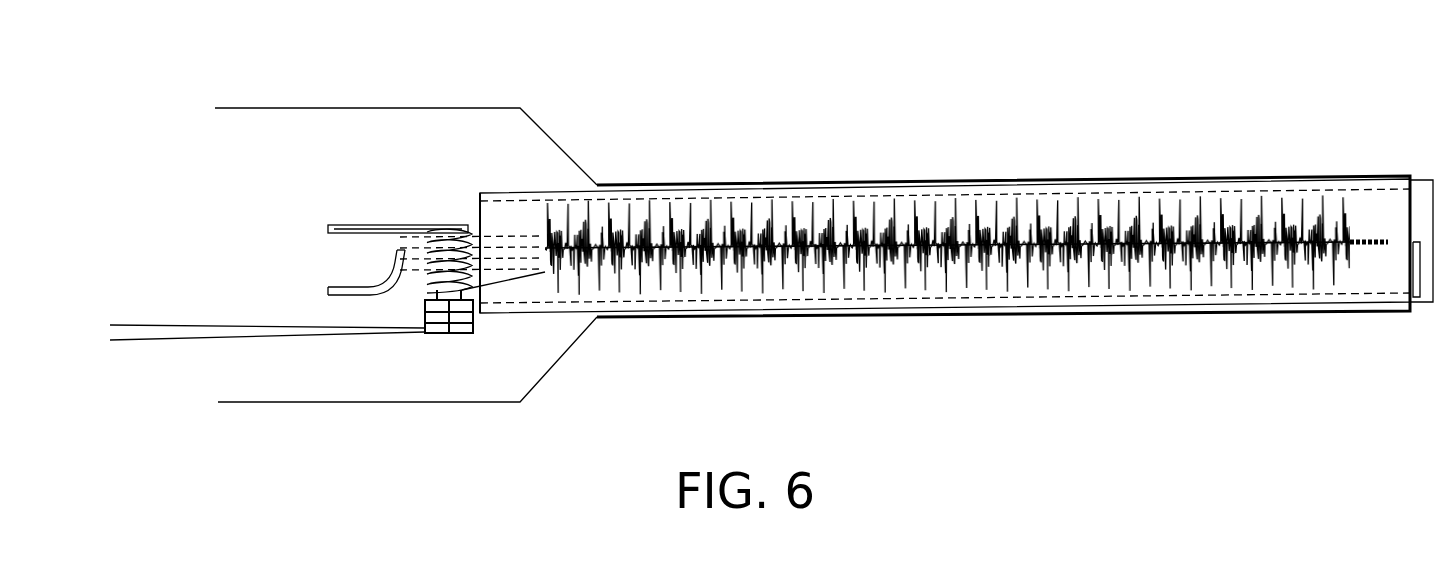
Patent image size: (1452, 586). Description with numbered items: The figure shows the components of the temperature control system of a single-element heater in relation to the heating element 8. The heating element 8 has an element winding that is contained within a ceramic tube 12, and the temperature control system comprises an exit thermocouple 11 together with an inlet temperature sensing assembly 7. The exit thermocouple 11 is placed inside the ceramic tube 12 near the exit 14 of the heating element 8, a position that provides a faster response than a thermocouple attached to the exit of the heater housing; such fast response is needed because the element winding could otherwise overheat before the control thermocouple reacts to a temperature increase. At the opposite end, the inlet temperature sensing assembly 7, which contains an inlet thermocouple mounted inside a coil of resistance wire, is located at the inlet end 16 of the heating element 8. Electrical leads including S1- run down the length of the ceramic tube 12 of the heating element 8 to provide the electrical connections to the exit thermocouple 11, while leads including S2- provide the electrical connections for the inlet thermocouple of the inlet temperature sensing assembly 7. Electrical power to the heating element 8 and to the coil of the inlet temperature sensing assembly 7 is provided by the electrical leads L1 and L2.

The electrical lead S1- is at (258, 403).
The lead S2- is at (157, 332).
The electrical lead L1 is at (348, 287).
The electrical lead L2 is at (350, 225).
The inlet temperature sensing assembly 7 is at (430, 200).
The heating element 8 is at (950, 348).
The exit thermocouple 11 is at (1420, 303).
The ceramic tube 12 is at (553, 192).
The exit 14 is at (1432, 207).
The inlet end 16 is at (477, 218).